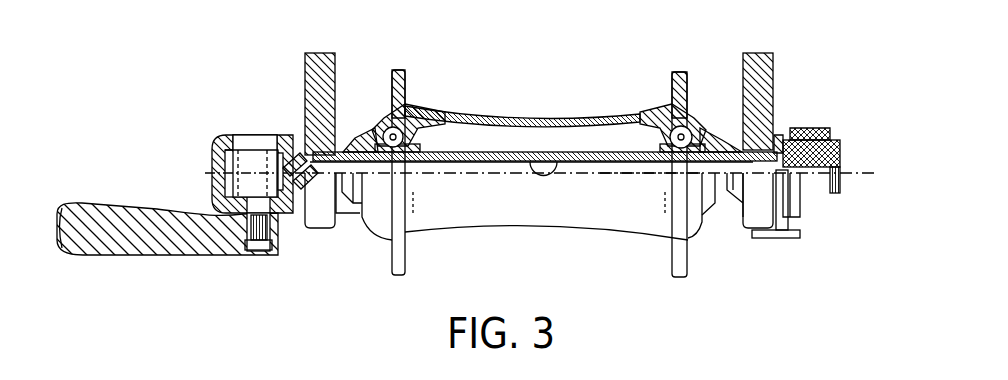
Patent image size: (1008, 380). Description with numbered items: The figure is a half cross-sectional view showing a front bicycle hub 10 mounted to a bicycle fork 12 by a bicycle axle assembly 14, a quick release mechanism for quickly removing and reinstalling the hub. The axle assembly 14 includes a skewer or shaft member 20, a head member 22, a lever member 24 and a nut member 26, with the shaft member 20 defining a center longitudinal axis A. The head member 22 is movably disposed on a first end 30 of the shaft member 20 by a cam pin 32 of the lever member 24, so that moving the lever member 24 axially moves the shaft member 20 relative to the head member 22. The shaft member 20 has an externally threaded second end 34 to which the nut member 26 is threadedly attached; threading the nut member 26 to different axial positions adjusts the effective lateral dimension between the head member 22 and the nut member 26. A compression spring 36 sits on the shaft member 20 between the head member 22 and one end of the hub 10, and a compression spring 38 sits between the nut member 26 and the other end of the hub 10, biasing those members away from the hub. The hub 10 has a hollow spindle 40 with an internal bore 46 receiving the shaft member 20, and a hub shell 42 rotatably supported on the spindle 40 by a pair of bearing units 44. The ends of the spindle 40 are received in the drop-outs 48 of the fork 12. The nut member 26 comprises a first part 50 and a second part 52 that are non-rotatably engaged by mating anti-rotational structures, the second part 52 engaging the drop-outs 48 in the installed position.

The front bicycle hub 10 is at (485, 231).
The bicycle fork 12 is at (734, 66).
The bicycle axle assembly 14 is at (212, 276).
The shaft member 20 is at (453, 150).
The head member 22 is at (205, 134).
The lever member 24 is at (89, 253).
The nut member 26 is at (849, 137).
The first end 30 is at (273, 161).
The cam pin 32 is at (206, 189).
The second end 34 is at (849, 165).
The compression spring 36 is at (302, 184).
The compression spring 38 is at (788, 174).
The spindle 40 is at (502, 152).
The hub shell 42 is at (538, 119).
The bearing units 44 is at (366, 121).
The internal bore 46 is at (558, 175).
The drop-outs 48 is at (318, 222).
The first part 50 is at (782, 123).
The second part 52 is at (822, 127).
The center longitudinal axis A is at (610, 176).